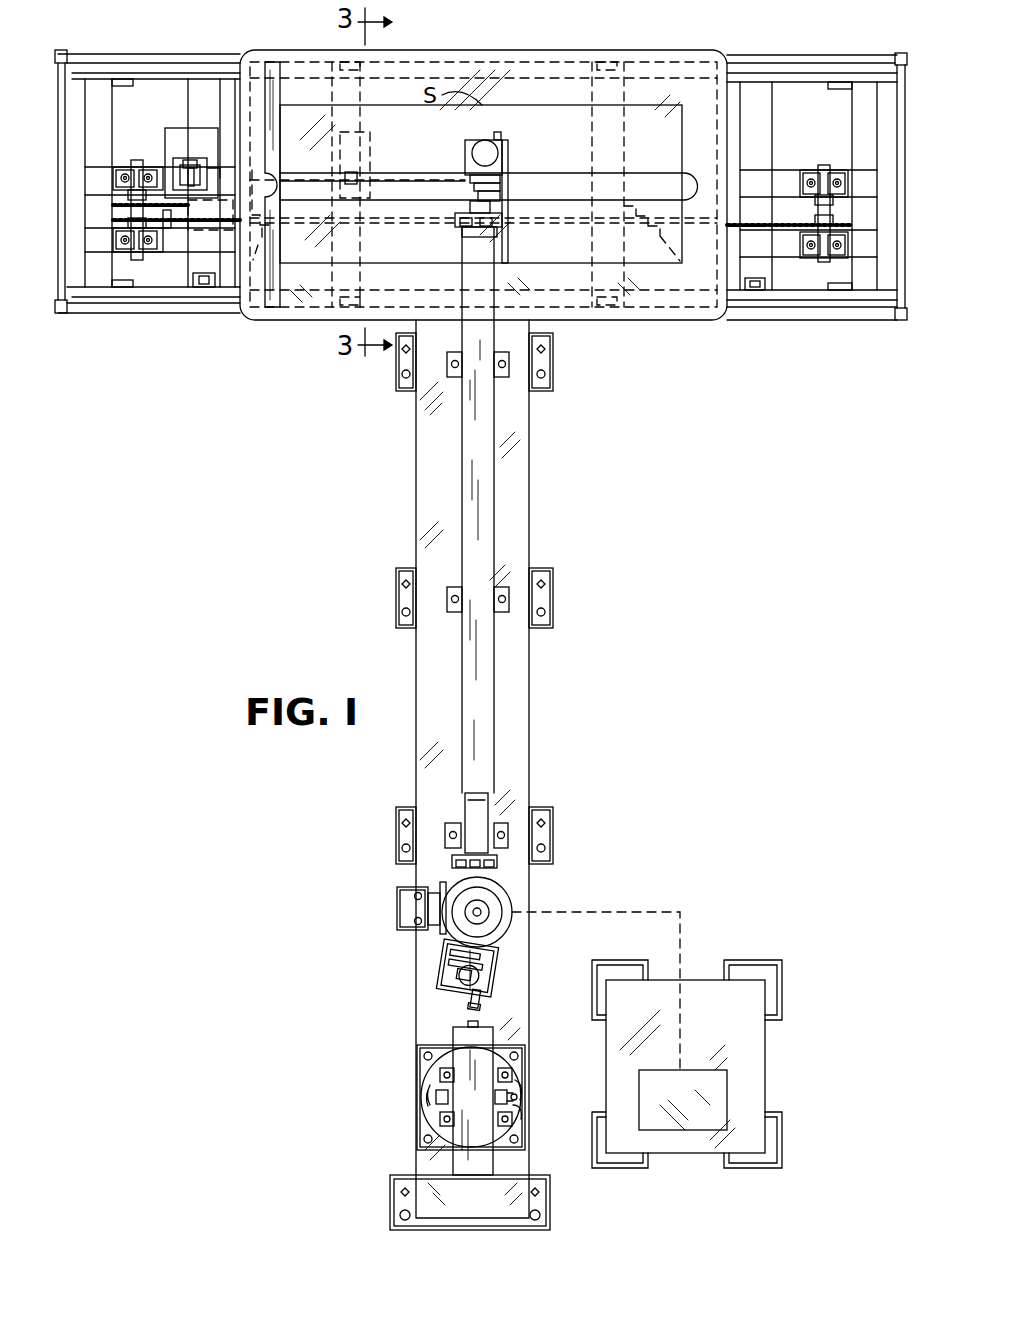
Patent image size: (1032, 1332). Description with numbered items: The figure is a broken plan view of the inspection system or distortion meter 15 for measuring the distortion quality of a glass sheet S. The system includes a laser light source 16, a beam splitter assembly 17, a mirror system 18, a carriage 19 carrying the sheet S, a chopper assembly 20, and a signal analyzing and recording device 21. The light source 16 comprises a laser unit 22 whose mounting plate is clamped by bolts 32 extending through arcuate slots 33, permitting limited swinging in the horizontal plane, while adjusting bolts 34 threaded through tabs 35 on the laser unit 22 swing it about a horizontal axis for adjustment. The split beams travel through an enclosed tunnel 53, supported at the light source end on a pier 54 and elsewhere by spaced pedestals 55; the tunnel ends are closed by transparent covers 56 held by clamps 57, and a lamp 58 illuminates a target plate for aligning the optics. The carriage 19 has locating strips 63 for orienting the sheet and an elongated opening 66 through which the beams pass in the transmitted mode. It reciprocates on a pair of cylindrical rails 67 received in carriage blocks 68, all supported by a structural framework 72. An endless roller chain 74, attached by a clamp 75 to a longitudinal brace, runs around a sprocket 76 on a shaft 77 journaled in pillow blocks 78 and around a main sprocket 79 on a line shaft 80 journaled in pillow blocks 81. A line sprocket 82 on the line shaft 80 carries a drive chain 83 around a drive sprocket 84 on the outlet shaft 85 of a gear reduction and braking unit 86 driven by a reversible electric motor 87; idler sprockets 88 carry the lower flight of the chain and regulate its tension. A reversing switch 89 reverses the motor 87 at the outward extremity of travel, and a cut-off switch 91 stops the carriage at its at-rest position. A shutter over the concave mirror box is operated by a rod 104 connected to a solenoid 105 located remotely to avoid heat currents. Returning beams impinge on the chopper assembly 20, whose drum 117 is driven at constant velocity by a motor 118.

The inspection system or distortion meter 15 is at (390, 523).
The laser light source 16 is at (473, 1180).
The beam splitter assembly 17 is at (430, 962).
The mirror system 18 is at (515, 145).
The carriage 19 is at (645, 340).
The chopper assembly 20 is at (520, 940).
The signal analyzing and recording device 21 is at (770, 1068).
The laser unit 22 is at (485, 1035).
The bolts 32 is at (515, 1098).
The arcuate slots 33 is at (513, 1090).
The adjusting bolts 34 is at (440, 1075).
The tabs 35 is at (440, 1070).
The tunnel 53 is at (495, 412).
The pier 54 is at (548, 835).
The pedestals 55 is at (548, 360).
The transparent covers 56 is at (508, 212).
The clamps 57 is at (460, 214).
The lamp 58 is at (475, 817).
The locating strips 63 is at (272, 88).
The elongated opening 66 is at (690, 190).
The cylindrical rails 67 is at (150, 313).
The carriage blocks 68 is at (640, 62).
The structural framework 72 is at (902, 313).
The endless roller chain 74 is at (785, 210).
The clamp 75 is at (467, 235).
The sprocket 76 is at (835, 223).
The shaft 77 is at (830, 210).
The pillow blocks 78 is at (815, 170).
The main sprocket 79 is at (130, 220).
The line shaft 80 is at (125, 185).
The pillow blocks 81 is at (138, 170).
The line sprocket 82 is at (113, 220).
The drive chain 83 is at (165, 220).
The drive sprocket 84 is at (185, 210).
The outlet shaft 85 is at (166, 227).
The gear reduction and braking unit 86 is at (170, 130).
The reversible electric motor 87 is at (340, 130).
The idler sprockets 88 is at (475, 223).
The reversing switch 89 is at (205, 288).
The cut-off switch 91 is at (760, 290).
The rod 104 is at (210, 168).
The solenoid 105 is at (187, 160).
The drum 117 is at (445, 881).
The motor 118 is at (490, 910).